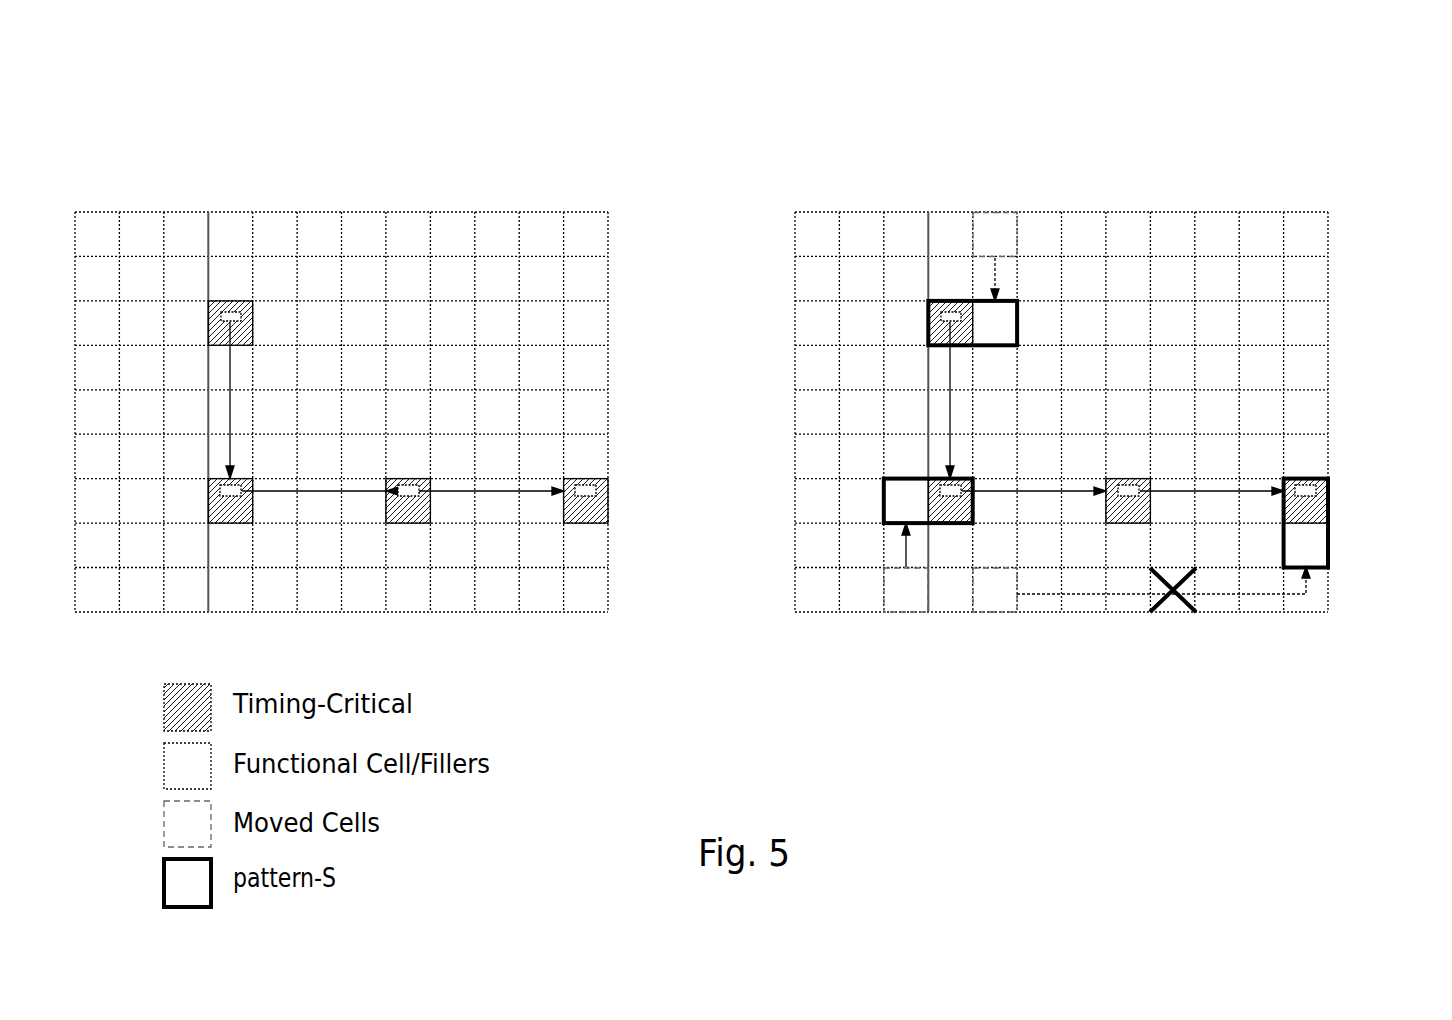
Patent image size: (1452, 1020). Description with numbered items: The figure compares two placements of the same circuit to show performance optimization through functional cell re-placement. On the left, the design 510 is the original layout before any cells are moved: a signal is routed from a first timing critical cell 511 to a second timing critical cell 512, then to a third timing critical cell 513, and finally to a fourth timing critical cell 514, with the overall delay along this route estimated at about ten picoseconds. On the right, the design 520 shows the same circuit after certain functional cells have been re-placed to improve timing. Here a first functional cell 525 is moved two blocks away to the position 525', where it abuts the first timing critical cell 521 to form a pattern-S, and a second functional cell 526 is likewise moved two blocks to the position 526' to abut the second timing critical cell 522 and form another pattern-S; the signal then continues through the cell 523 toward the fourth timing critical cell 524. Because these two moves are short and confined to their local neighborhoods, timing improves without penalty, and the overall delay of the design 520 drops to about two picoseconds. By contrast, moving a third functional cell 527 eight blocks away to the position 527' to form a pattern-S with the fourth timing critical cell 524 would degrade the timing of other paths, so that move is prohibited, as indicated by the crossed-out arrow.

The design 510 is at (422, 86).
The first timing critical cell 511 is at (216, 328).
The second timing critical cell 512 is at (228, 523).
The third timing critical cell 513 is at (423, 478).
The fourth timing critical cell 514 is at (608, 514).
The design 520 is at (1142, 86).
The first timing critical cell 521 is at (938, 330).
The second timing critical cell 522 is at (948, 523).
The timing-critical cell 523 is at (1143, 478).
The fourth timing critical cell 524 is at (1328, 514).
The first functional cell 525 is at (993, 227).
The first functional cell (moved position) 525' is at (996, 259).
The second functional cell 526 is at (907, 614).
The second functional cell (moved position) 526' is at (850, 480).
The third functional cell 527 is at (1141, 636).
The third functional cell (prohibited position) 527' is at (1344, 527).